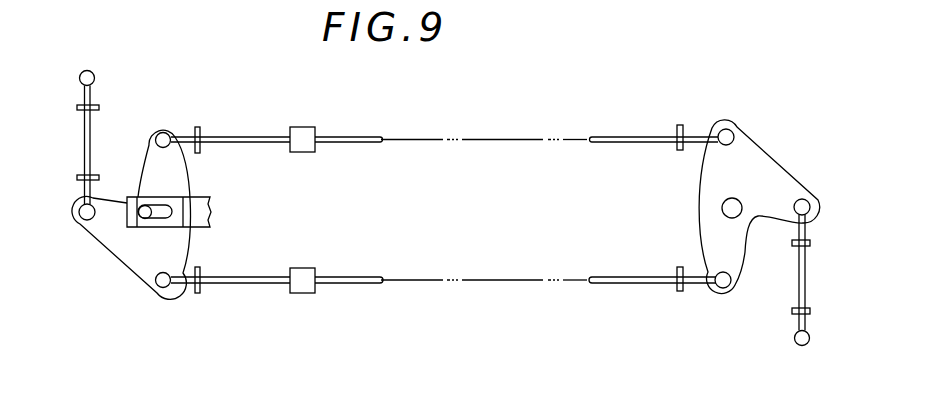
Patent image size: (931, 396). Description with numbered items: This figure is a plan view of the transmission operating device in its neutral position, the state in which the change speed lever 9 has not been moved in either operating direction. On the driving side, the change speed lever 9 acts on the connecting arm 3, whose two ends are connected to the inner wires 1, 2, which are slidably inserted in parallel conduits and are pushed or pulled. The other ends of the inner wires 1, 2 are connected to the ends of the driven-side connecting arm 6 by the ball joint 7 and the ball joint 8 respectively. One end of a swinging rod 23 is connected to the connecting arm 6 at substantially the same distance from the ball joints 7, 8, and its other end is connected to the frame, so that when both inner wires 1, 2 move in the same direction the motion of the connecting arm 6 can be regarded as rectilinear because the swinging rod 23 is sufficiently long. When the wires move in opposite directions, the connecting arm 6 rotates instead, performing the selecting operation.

The inner wire 1 is at (513, 137).
The inner wire 2 is at (523, 280).
The connecting arm 3 is at (123, 242).
The connecting arm 6 is at (777, 175).
The ball joint 7 is at (729, 132).
The ball joint 8 is at (723, 285).
The change speed lever 9 is at (147, 207).
The swinging rod 23 is at (800, 282).